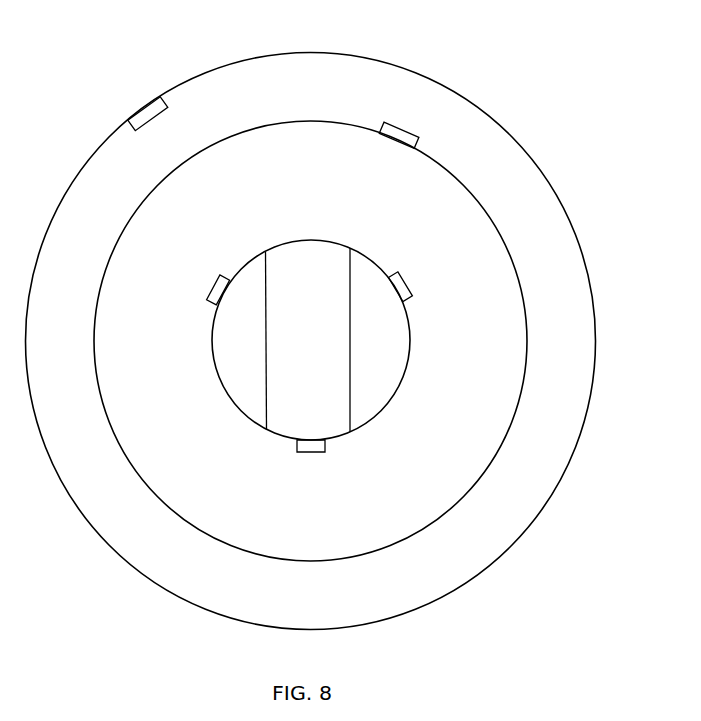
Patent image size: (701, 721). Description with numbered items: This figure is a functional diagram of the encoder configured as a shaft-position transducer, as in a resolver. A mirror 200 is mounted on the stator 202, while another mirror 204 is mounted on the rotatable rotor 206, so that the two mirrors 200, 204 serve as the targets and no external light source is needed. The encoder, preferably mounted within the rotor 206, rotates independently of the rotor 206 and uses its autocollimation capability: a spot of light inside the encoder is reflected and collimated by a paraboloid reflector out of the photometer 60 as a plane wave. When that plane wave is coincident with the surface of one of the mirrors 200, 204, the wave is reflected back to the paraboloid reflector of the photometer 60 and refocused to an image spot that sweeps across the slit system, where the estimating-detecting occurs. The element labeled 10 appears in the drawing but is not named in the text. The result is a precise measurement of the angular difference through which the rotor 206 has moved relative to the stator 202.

The mirror 200 is at (152, 103).
The stator 202 is at (333, 53).
The mirror 204 is at (398, 128).
The rotor 206 is at (513, 262).
The hybrid circuit / rotating assembly 10 is at (386, 354).
The photometer 60 is at (323, 354).